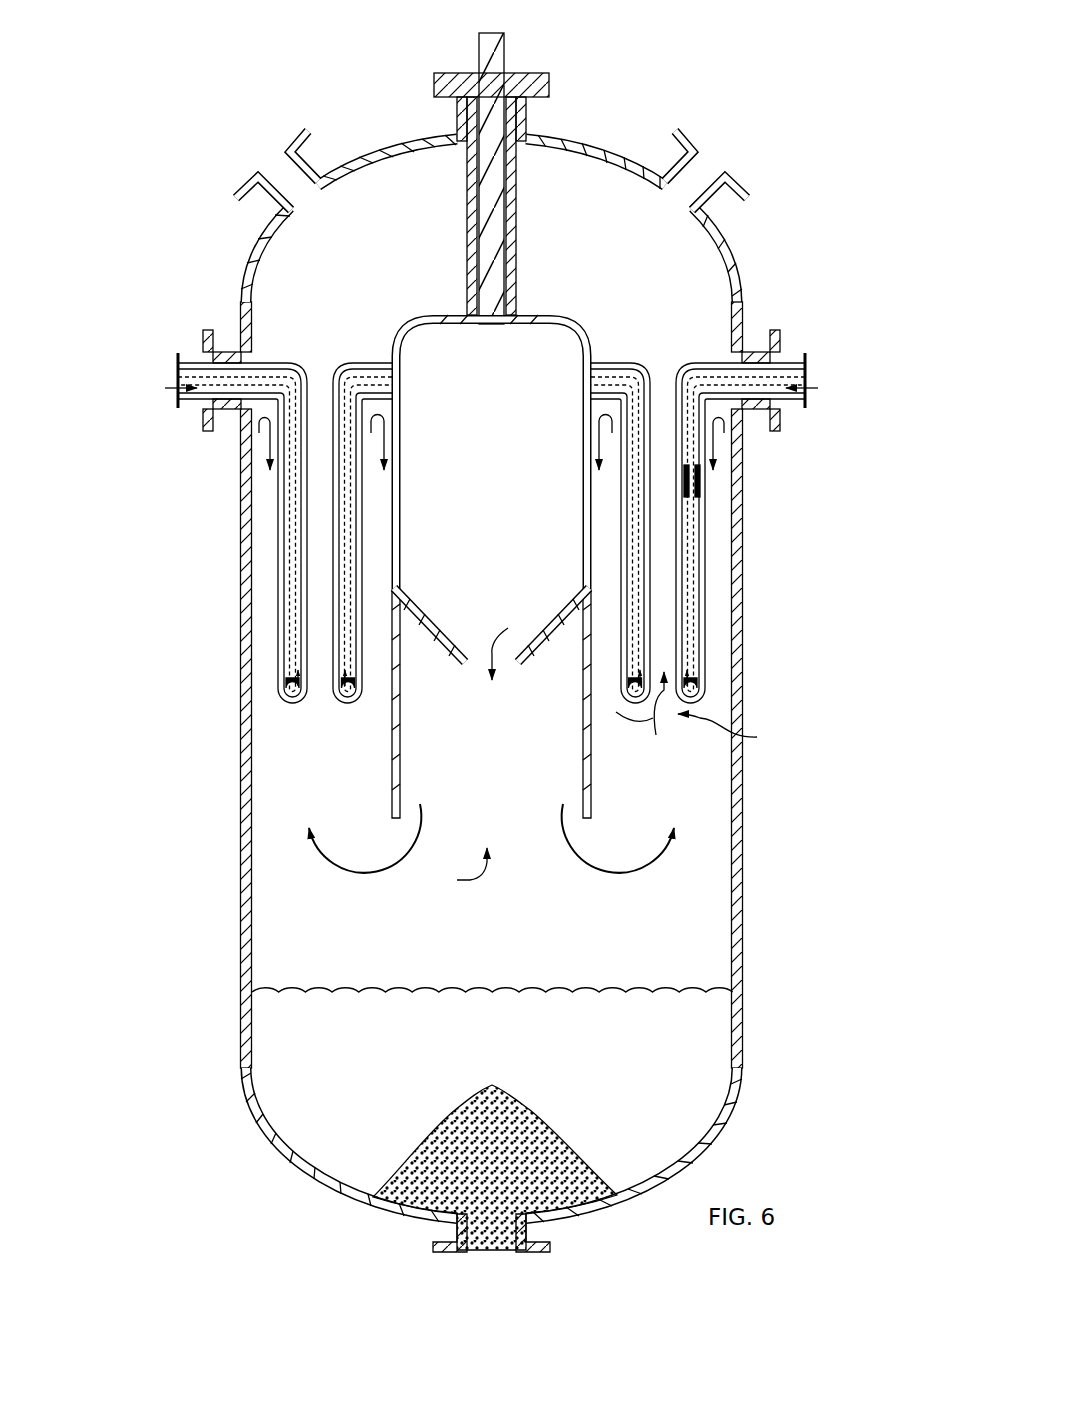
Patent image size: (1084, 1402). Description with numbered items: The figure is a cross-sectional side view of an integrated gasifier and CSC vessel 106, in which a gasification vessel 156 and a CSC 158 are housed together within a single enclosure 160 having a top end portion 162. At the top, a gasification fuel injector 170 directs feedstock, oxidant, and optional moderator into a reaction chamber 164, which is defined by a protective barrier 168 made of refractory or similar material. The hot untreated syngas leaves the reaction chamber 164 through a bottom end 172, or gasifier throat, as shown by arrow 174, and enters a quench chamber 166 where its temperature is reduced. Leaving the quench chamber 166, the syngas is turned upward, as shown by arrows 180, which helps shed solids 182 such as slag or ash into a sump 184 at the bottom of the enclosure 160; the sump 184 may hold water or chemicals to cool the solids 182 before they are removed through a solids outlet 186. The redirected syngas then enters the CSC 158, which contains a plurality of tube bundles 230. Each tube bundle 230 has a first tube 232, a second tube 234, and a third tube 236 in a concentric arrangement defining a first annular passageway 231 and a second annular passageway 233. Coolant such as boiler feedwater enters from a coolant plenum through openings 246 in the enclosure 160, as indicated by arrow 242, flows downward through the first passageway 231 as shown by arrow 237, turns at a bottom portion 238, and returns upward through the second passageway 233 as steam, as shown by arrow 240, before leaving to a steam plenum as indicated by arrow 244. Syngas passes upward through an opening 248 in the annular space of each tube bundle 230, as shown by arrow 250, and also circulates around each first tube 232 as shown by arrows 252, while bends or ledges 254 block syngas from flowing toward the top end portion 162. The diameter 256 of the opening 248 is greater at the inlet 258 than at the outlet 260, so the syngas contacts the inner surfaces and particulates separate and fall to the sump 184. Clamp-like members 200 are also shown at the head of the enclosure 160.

The integrated gasifier and CSC vessel 106 is at (445, 615).
The gasification vessel 156 is at (376, 123).
The CSC 158 is at (280, 350).
The enclosure 160 is at (233, 268).
The top end portion 162 is at (600, 126).
The reaction chamber 164 is at (446, 353).
The quench chamber 166 is at (448, 871).
The protective barrier 168 is at (560, 313).
The gasification fuel injector 170 is at (487, 32).
The bottom end 172 is at (438, 618).
The arrow 174 is at (539, 634).
The arrows 180 is at (378, 865).
The solids 182 is at (515, 1110).
The sump 184 is at (560, 1000).
The solids outlet 186 is at (508, 1254).
The clamp bracket 200 is at (267, 157).
The tube bundle 230 is at (688, 358).
The first annular passageway 231 is at (700, 565).
The first tube 232 is at (290, 519).
The second annular passageway 233 is at (685, 620).
The second tube 234 is at (293, 586).
The third tube 236 is at (307, 652).
The arrow 237 is at (705, 482).
The bottom portion 238 is at (285, 706).
The arrow 240 is at (690, 500).
The arrow 242 is at (166, 391).
The arrow 244 is at (175, 371).
The opening 246 is at (190, 406).
The opening 248 is at (323, 598).
The arrow 250 is at (662, 718).
The arrows 252 is at (714, 443).
The bends or ledges 254 is at (618, 364).
The diameter 256 is at (322, 572).
The inlet 258 is at (320, 703).
The outlet 260 is at (320, 366).